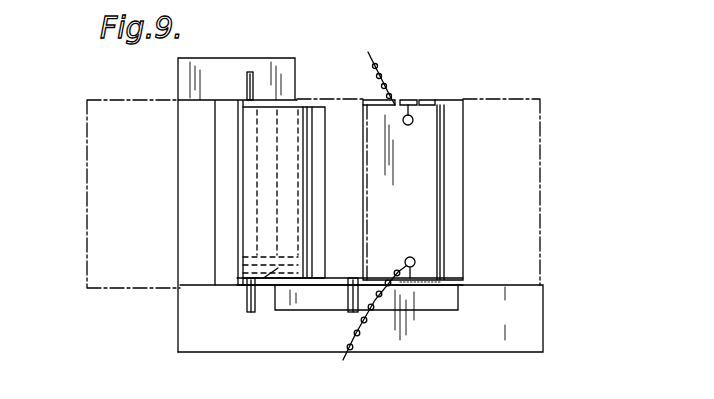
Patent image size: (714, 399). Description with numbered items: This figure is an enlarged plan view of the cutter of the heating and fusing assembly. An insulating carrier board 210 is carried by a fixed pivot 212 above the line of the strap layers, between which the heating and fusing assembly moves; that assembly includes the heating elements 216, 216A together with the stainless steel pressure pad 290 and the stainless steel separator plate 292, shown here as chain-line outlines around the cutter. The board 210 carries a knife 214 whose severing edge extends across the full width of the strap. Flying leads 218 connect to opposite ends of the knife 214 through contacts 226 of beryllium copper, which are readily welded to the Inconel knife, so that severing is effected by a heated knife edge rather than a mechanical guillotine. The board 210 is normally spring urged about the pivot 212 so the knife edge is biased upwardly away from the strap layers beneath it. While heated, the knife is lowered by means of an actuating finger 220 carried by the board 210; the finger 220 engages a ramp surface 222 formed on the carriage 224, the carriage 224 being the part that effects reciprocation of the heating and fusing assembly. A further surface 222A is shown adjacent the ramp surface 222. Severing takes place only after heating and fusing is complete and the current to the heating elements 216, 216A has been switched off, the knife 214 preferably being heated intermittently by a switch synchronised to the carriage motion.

The insulating carrier board 210 is at (246, 179).
The fixed pivot 212 is at (253, 72).
The knife 214 is at (450, 166).
The heating element 216 is at (240, 116).
The heating element 216A is at (284, 123).
The flying leads 218 is at (384, 82).
The actuating finger 220 is at (350, 298).
The ramp surface 222 is at (254, 261).
The plate pin 222A is at (246, 288).
The carriage 224 is at (528, 318).
The contacts 226 is at (412, 118).
The pressure pad 290 is at (118, 122).
The separator plate 292 is at (525, 178).